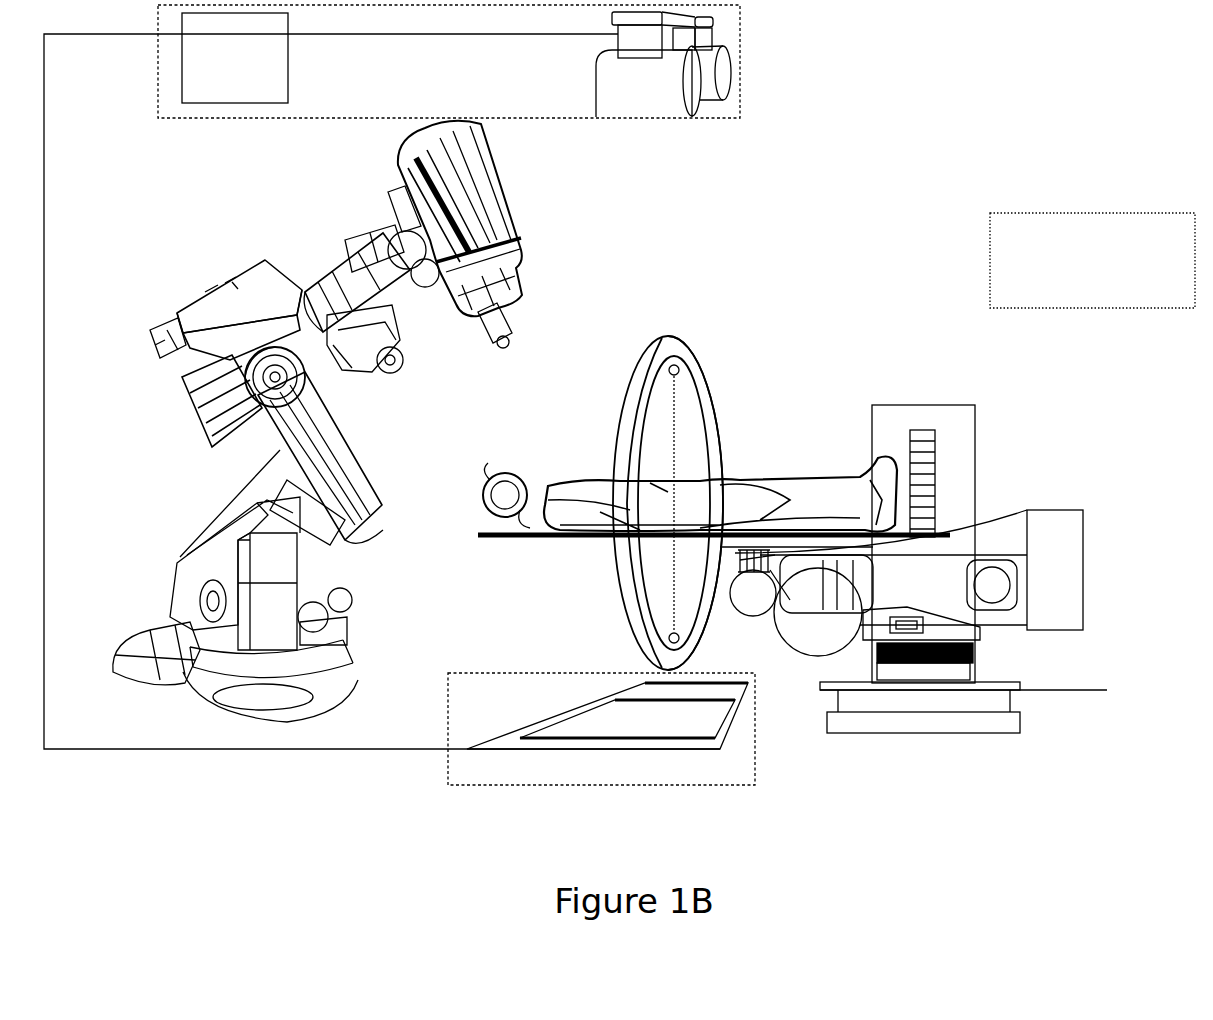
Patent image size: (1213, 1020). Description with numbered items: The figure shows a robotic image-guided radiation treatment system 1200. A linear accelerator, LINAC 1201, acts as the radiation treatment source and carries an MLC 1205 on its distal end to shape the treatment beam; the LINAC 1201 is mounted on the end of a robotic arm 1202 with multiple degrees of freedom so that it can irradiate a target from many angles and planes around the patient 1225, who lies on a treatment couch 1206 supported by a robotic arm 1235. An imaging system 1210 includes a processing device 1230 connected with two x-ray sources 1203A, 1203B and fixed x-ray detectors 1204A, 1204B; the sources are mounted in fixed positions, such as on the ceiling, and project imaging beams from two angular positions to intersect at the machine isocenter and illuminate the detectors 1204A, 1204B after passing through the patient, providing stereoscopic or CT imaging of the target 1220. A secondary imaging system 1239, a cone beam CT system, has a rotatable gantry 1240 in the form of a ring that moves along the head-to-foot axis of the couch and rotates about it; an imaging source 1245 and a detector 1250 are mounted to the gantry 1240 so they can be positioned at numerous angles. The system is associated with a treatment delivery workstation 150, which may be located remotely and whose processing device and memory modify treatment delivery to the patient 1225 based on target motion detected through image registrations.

The radiation treatment system 1200 is at (1014, 137).
The processing device 1230 is at (235, 58).
The imaging system 1210 is at (745, 37).
The x-ray source 1203A is at (680, 120).
The x-ray source 1203B is at (735, 72).
The treatment delivery workstation 150 is at (1092, 260).
The robotic arm 1202 is at (205, 280).
The linear accelerator (LINAC) 1201 is at (528, 210).
The MLC 1205 is at (518, 335).
The secondary imaging system 1239 is at (710, 493).
The rotatable gantry 1240 is at (627, 383).
The imaging source 1245 is at (680, 366).
The detector 1250 is at (688, 637).
The patient 1225 is at (508, 474).
The target region 1220 is at (712, 487).
The treatment couch 1206 is at (476, 540).
The robotic arm for couch 1235 is at (1020, 506).
The x-ray detector 1204A is at (747, 697).
The x-ray detector 1204B is at (642, 748).